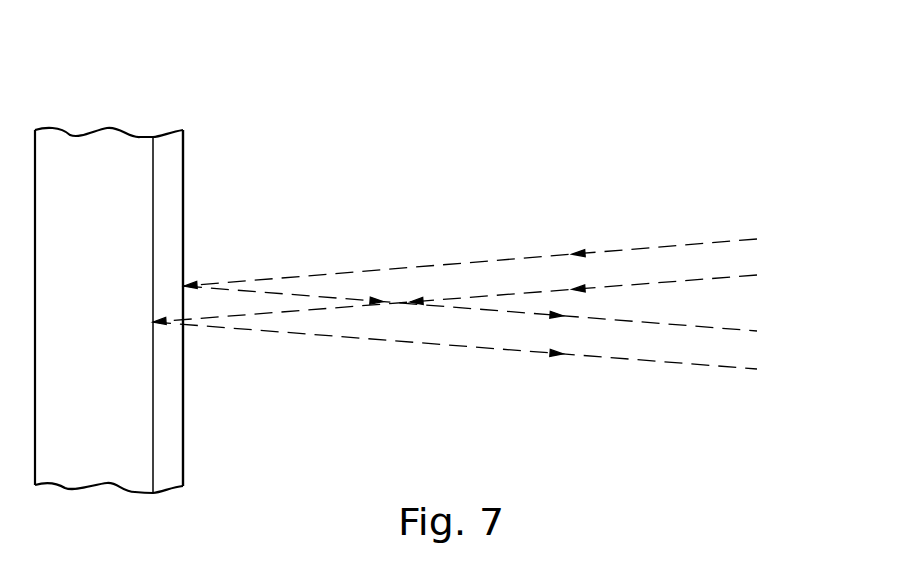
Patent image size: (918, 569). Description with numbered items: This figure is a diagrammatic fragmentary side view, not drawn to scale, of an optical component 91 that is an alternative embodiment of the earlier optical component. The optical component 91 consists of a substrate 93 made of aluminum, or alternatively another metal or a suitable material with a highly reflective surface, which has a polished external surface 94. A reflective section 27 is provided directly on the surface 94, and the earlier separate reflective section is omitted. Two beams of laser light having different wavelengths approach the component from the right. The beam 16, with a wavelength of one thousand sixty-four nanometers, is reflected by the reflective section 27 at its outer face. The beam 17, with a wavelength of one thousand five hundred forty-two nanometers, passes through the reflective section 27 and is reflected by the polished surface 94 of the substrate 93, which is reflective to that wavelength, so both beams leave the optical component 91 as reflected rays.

The optical component 91 is at (85, 92).
The reflective section 27 is at (167, 142).
The polished external surface 94 is at (153, 214).
The substrate 93 is at (108, 327).
The beam 16 is at (690, 245).
The beam 17 is at (749, 275).